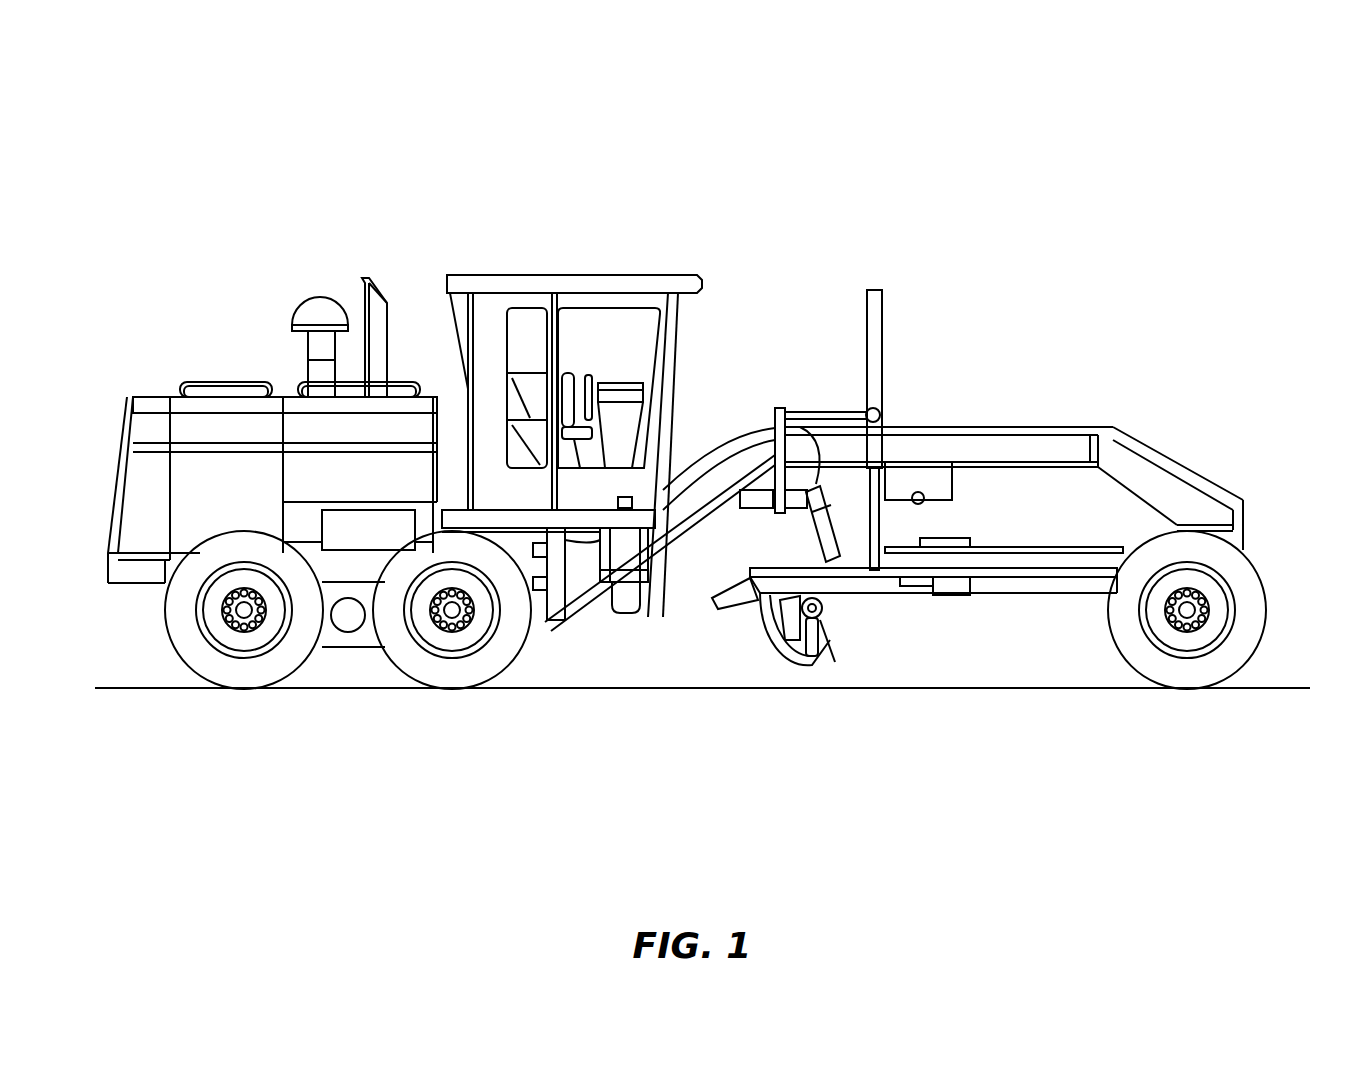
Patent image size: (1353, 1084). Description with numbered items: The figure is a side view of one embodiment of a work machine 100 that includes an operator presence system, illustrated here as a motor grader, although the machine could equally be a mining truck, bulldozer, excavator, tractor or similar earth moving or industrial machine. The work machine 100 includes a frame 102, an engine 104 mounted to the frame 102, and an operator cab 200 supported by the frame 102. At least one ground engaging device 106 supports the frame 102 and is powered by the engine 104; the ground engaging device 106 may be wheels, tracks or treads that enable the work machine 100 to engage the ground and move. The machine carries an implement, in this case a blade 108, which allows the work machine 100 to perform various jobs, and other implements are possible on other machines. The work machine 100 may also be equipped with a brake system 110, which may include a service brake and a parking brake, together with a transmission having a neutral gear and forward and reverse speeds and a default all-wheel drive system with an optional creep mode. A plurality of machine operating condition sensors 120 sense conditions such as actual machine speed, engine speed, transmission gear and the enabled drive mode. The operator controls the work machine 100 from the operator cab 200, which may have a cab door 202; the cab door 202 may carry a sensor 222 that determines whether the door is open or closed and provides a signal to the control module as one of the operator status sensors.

The work machine 100 is at (1208, 141).
The frame 102 is at (165, 595).
The engine 104 is at (160, 397).
The ground engaging device 106 is at (240, 673).
The blade 108 is at (833, 638).
The brake system 110 is at (553, 625).
The machine operating condition sensors 120 is at (548, 625).
The operator cab 200 is at (618, 354).
The cab door 202 is at (657, 410).
The sensor 222 is at (634, 502).